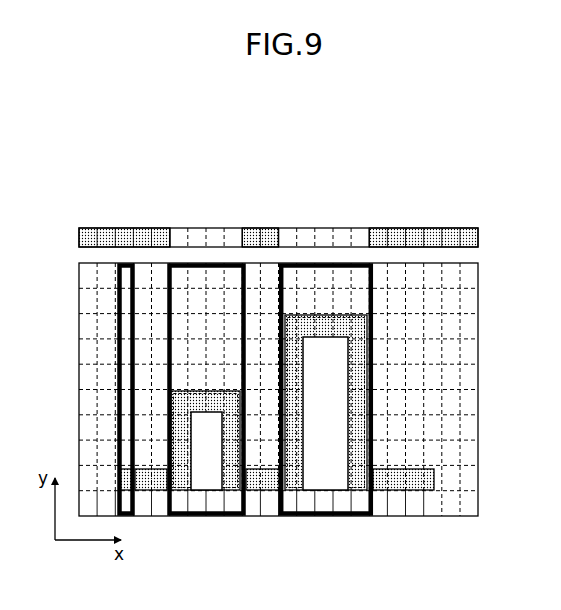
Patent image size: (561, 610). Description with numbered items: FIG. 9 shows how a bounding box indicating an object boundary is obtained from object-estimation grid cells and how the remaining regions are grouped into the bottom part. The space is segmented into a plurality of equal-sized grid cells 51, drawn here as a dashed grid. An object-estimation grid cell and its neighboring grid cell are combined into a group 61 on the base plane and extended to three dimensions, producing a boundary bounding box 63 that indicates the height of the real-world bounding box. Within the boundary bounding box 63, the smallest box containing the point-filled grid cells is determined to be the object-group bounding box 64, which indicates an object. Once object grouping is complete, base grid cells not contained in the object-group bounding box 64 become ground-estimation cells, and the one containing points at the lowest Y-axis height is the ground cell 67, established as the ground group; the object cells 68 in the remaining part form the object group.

The grid cell 51 is at (473, 277).
The group 61 is at (197, 412).
The boundary bounding box 63 is at (167, 273).
The object-group bounding box 64 is at (171, 390).
The ground cell 67 is at (79, 224).
The object cell 68 is at (243, 224).